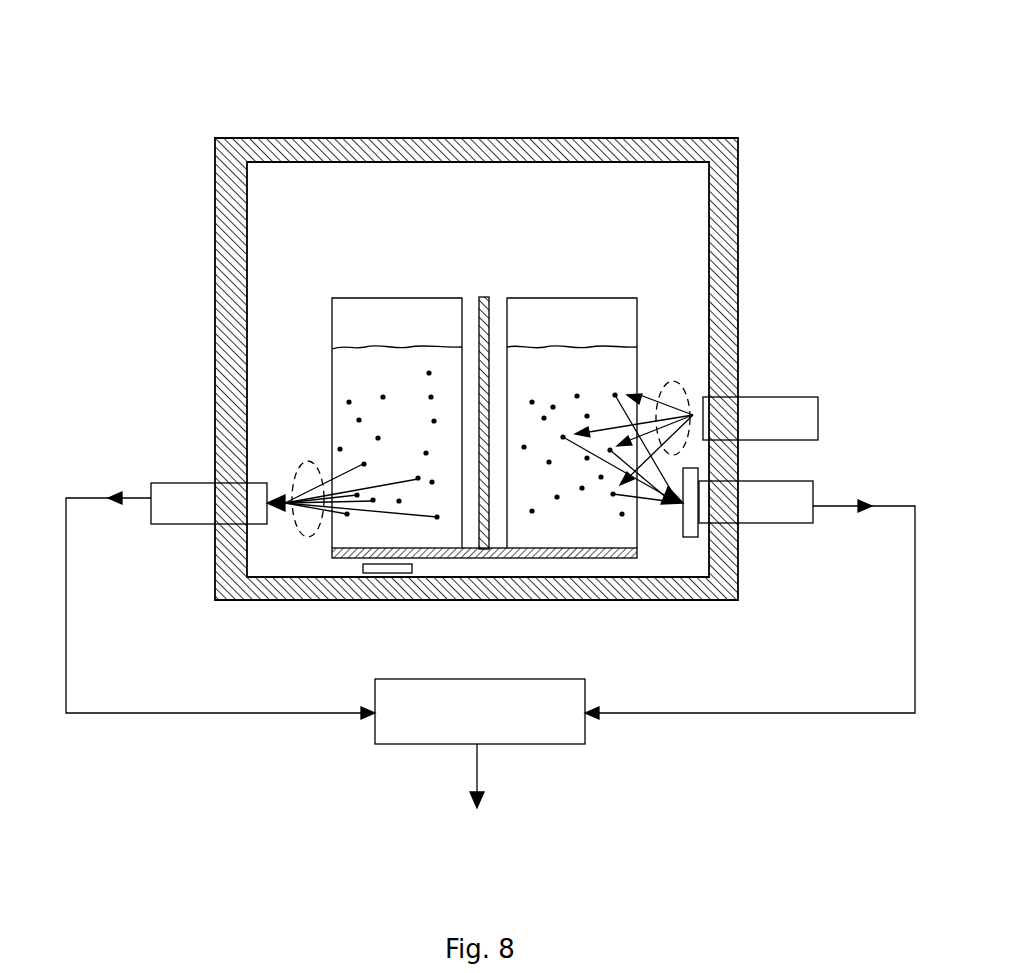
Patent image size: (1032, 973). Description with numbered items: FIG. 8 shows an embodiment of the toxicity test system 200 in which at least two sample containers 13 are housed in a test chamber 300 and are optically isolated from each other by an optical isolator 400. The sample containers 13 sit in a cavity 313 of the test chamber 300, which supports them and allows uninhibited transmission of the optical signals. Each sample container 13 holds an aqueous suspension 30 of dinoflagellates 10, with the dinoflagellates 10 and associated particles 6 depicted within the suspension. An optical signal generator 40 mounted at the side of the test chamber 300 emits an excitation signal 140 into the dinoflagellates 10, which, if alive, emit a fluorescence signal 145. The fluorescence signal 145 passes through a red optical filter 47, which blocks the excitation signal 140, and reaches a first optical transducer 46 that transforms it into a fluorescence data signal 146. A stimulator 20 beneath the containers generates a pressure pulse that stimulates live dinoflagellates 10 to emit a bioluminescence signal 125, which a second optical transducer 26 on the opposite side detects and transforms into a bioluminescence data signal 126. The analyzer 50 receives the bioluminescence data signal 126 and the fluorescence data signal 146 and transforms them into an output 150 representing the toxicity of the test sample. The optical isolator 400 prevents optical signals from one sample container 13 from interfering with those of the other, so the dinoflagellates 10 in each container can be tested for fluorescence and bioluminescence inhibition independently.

The toxicity test system 200 is at (190, 103).
The test chamber 300 is at (738, 226).
The cavity 313 is at (326, 212).
The sample container 13 is at (510, 298).
The optical isolator 400 is at (484, 560).
The dinoflagellates 10 is at (349, 400).
The aqueous suspension 30 is at (620, 355).
The sample particles 6 is at (590, 370).
The excitation signal 140 is at (680, 378).
The optical signal generator 40 is at (807, 397).
The fluorescence signal 145 is at (671, 505).
The red optical filter 47 is at (690, 537).
The first optical transducer 46 is at (802, 481).
The fluorescence data signal 146 is at (915, 650).
The second optical transducer 26 is at (190, 483).
The bioluminescence signal 125 is at (308, 537).
The stimulator 20 is at (386, 573).
The bioluminescence data signal 126 is at (66, 620).
The analyzer 50 is at (390, 745).
The output 150 is at (477, 775).